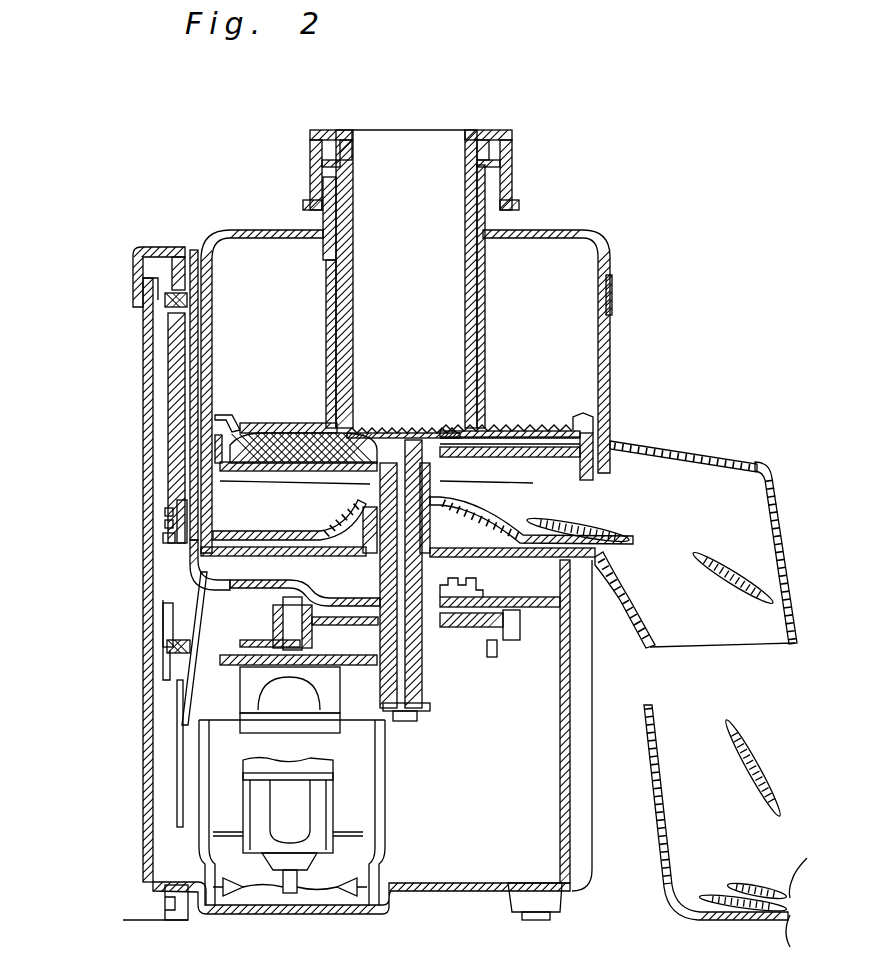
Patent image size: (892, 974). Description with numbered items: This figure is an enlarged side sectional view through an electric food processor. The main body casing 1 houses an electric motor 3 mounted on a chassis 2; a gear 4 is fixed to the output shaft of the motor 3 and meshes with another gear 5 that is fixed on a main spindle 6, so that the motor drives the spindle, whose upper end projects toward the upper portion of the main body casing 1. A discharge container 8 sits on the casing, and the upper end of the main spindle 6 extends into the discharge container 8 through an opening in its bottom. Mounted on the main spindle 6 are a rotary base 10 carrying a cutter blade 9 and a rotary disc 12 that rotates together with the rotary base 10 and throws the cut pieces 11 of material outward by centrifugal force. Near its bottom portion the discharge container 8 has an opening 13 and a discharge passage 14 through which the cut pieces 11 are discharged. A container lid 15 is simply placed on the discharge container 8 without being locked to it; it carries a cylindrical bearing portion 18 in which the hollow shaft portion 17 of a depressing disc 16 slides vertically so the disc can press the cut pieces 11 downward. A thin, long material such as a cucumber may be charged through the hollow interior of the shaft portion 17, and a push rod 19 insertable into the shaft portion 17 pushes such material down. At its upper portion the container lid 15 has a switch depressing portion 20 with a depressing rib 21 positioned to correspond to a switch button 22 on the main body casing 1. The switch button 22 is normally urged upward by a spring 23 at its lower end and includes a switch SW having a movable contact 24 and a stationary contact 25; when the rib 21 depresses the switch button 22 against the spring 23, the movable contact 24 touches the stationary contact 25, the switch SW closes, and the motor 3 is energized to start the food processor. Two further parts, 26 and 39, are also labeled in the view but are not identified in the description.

The main body casing 1 is at (145, 565).
The chassis 2 is at (240, 690).
The electric motor 3 is at (235, 755).
The gear 4 is at (277, 623).
The gear 5 is at (465, 660).
The main spindle 6 is at (440, 500).
The discharge container 8 is at (607, 340).
The cutter blade 9 is at (523, 450).
The rotary base 10 is at (240, 455).
The cut pieces 11 is at (235, 430).
The rotary disc 12 is at (230, 507).
The opening 13 is at (610, 503).
The discharge passage 14 is at (781, 540).
The container lid 15 is at (268, 230).
The depressing disc 16 is at (507, 423).
The hollow shaft portion 17 is at (487, 295).
The cylindrical bearing portion 18 is at (513, 177).
The push rod 19 is at (505, 130).
The switch depressing portion 20 is at (177, 247).
The depressing rib 21 is at (177, 278).
The switch button 22 is at (193, 300).
The spring 23 is at (165, 520).
The movable contact 24 is at (170, 640).
The stationary contact 25 is at (200, 595).
The switch SW is at (215, 605).
The packing 26 is at (175, 352).
The drive shaft 39 is at (378, 530).